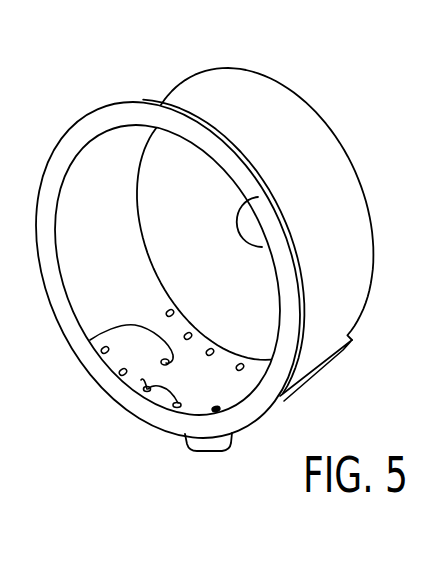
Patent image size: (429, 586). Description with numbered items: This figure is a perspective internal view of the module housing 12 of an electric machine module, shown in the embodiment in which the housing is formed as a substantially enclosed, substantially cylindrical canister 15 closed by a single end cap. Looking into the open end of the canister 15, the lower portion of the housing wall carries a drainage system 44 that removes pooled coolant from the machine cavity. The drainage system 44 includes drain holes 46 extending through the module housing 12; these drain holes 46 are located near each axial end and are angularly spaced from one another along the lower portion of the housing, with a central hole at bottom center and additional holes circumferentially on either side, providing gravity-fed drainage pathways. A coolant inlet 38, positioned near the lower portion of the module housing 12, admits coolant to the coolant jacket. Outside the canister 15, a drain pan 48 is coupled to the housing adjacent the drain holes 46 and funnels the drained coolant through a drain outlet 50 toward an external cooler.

The module housing 12 is at (275, 92).
The canister 15 is at (328, 156).
The coolant inlet 38 is at (90, 340).
The drainage system 44 is at (224, 330).
The drain holes 46 is at (141, 380).
The drain pan 48 is at (298, 378).
The drain outlet 50 is at (204, 453).